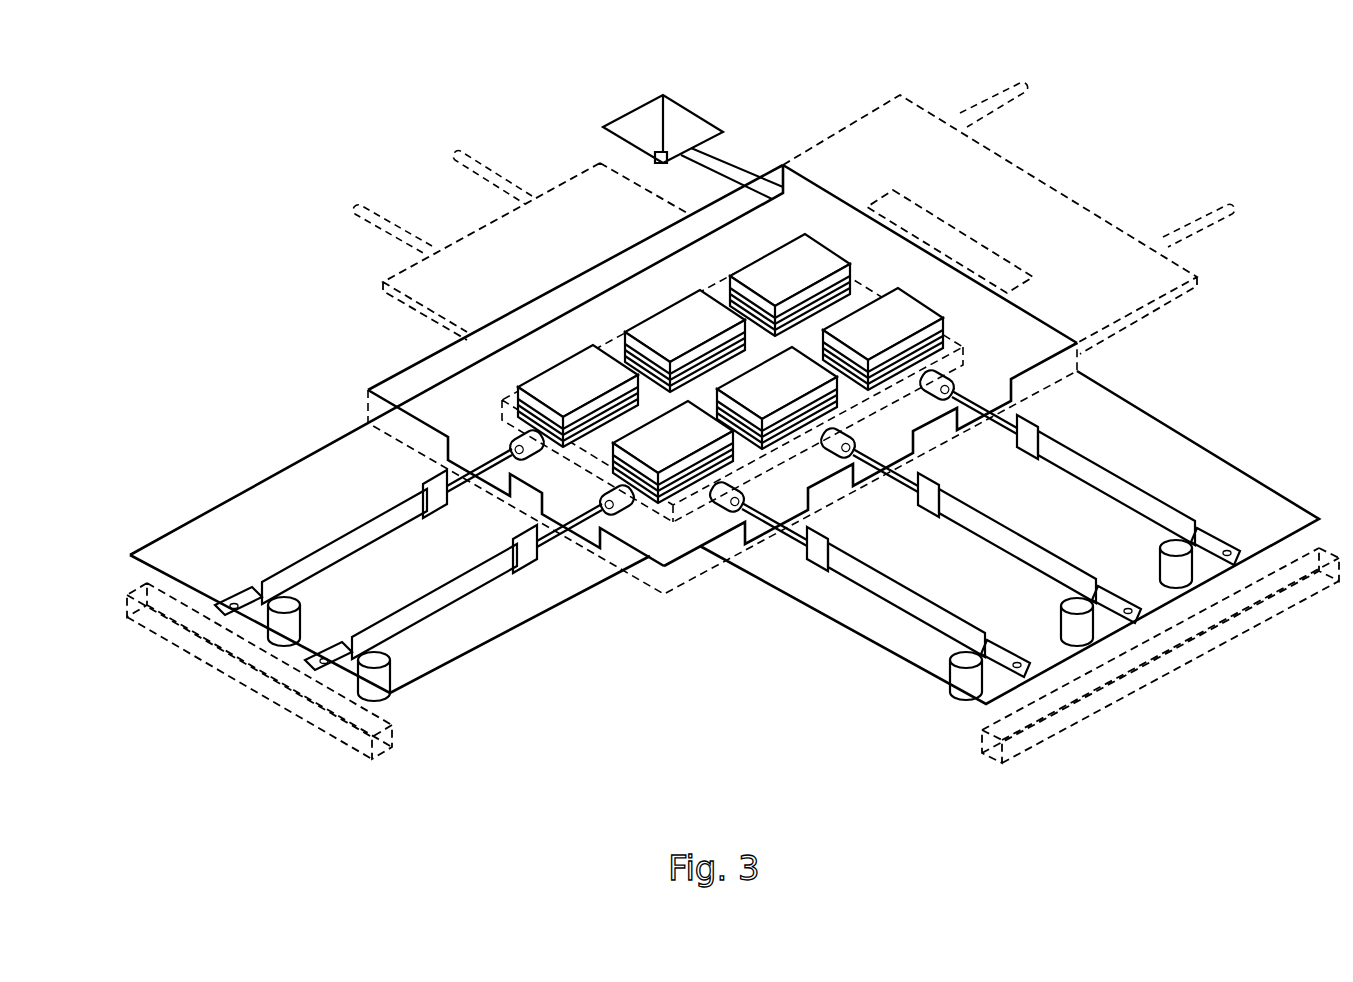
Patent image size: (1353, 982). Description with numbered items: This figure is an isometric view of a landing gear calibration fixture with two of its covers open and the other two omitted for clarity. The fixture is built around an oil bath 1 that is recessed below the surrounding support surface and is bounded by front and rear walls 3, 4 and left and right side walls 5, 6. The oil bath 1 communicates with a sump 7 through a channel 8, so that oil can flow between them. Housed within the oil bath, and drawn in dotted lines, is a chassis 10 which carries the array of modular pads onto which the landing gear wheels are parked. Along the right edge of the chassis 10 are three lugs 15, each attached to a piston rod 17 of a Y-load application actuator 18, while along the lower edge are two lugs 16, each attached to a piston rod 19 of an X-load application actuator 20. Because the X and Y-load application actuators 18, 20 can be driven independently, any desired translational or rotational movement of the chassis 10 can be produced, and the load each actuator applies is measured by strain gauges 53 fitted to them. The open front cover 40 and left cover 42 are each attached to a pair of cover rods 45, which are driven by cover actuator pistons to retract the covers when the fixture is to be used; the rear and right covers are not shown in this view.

The oil bath 1 is at (430, 400).
The front wall 3 is at (1033, 337).
The rear wall 4 is at (443, 428).
The left side wall 5 is at (587, 290).
The right side wall 6 is at (817, 477).
The sump 7 is at (642, 106).
The channel 8 is at (731, 162).
The chassis 10 is at (687, 500).
The lugs 15 is at (852, 438).
The lugs 16 is at (537, 456).
The piston rods 17 is at (1000, 442).
The Y-load application actuators 18 is at (1029, 534).
The piston rods 19 is at (513, 540).
The X-load application actuators 20 is at (433, 593).
The front cover 40 is at (1163, 277).
The left cover 42 is at (573, 197).
The cover rods 45 is at (412, 238).
The strain gauges 53 is at (617, 512).